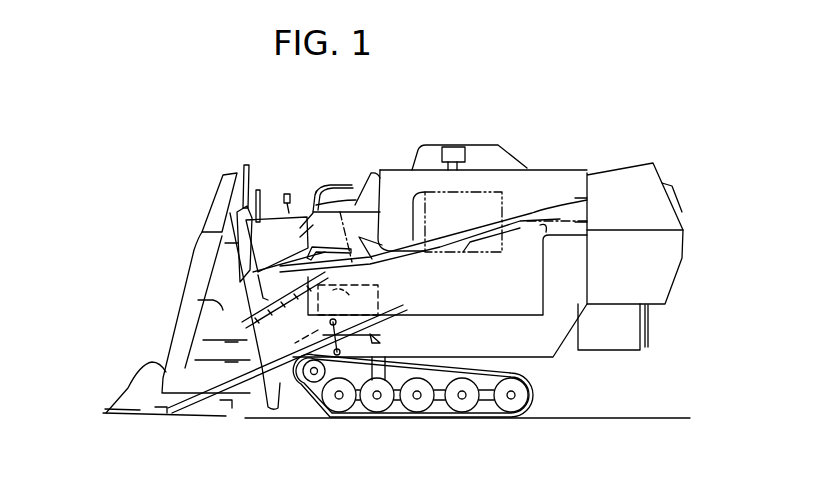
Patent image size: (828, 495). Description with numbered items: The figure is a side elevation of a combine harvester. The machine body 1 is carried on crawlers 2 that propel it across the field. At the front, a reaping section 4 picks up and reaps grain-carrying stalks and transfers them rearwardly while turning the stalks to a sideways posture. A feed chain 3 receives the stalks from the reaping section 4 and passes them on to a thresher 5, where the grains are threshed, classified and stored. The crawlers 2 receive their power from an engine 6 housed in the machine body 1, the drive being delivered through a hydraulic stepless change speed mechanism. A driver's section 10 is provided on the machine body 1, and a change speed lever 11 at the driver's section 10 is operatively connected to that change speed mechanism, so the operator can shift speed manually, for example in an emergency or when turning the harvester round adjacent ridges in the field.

The machine body 1 is at (396, 170).
The crawlers 2 is at (545, 398).
The feed chain 3 is at (343, 212).
The reaping section 4 is at (178, 277).
The thresher 5 is at (505, 205).
The engine 6 is at (378, 303).
The driver's section 10 is at (327, 171).
The change speed lever 11 is at (285, 196).